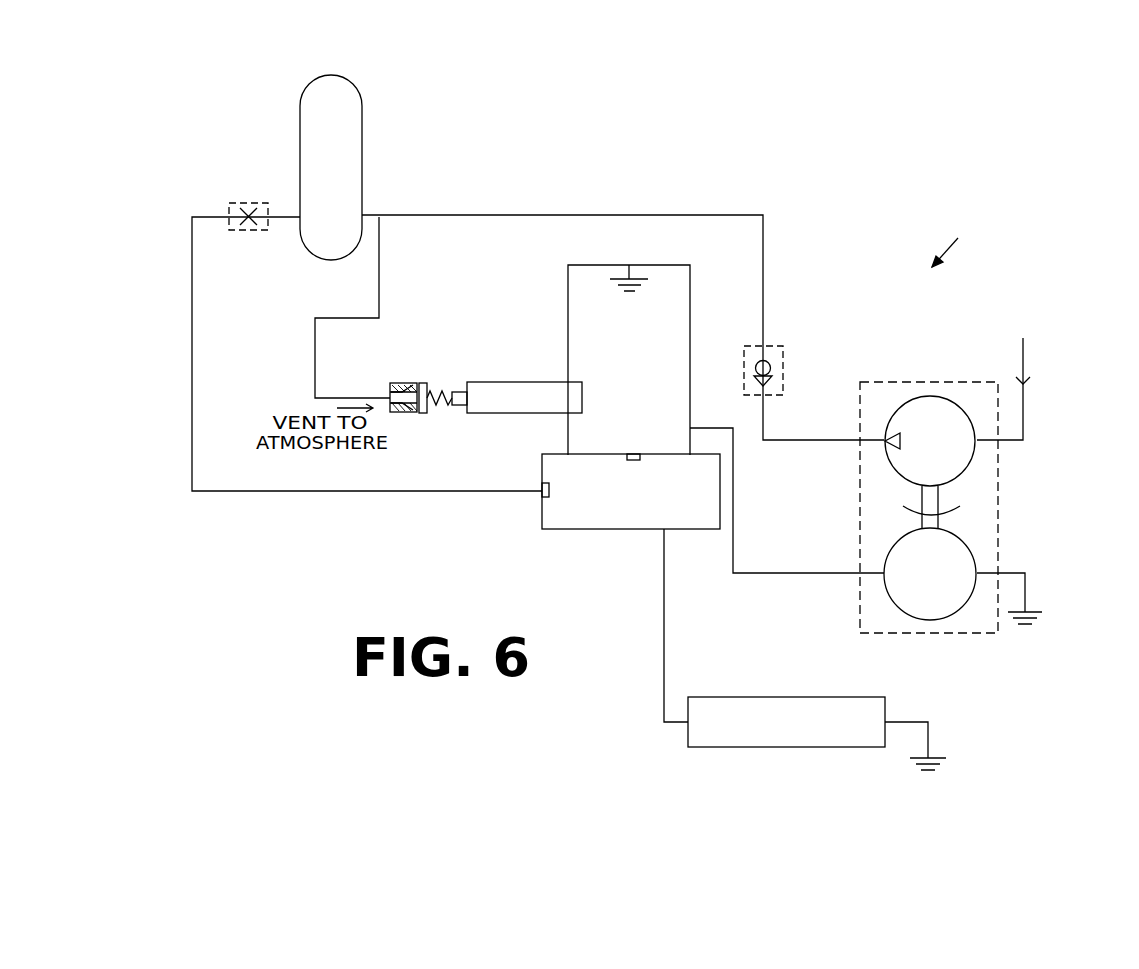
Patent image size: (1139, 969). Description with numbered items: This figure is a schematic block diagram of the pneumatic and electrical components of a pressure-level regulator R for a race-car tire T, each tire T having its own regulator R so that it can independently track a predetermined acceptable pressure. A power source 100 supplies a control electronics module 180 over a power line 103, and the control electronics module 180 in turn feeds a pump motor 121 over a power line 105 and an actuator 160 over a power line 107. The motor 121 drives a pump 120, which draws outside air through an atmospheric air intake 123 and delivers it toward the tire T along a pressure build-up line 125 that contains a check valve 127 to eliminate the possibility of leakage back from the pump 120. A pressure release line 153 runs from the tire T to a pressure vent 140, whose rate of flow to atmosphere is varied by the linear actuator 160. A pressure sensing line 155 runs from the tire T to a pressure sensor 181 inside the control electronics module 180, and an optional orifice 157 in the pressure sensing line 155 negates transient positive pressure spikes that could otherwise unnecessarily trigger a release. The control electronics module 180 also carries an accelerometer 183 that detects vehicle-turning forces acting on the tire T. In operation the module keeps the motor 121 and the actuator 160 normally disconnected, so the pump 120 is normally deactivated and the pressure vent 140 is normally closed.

The power source 100 is at (780, 748).
The power line 103 is at (664, 613).
The power line 105 is at (828, 570).
The power line 107 is at (567, 425).
The pump 120 is at (920, 397).
The electric motor 121 is at (945, 620).
The atmospheric air intake 123 is at (1023, 412).
The pump output conduit 125 is at (753, 213).
The check valve 127 is at (783, 346).
The pressure vent 140 is at (405, 383).
The pressure release line 153 is at (315, 358).
The pressure sensing line 155 is at (335, 492).
The orifice 157 is at (247, 203).
The actuator 160 is at (512, 381).
The control electronics module 180 is at (605, 530).
The pressure sensor 181 is at (540, 497).
The accelerometer 183 is at (634, 454).
The tire T is at (300, 120).
The pressure-level regulator R is at (956, 243).